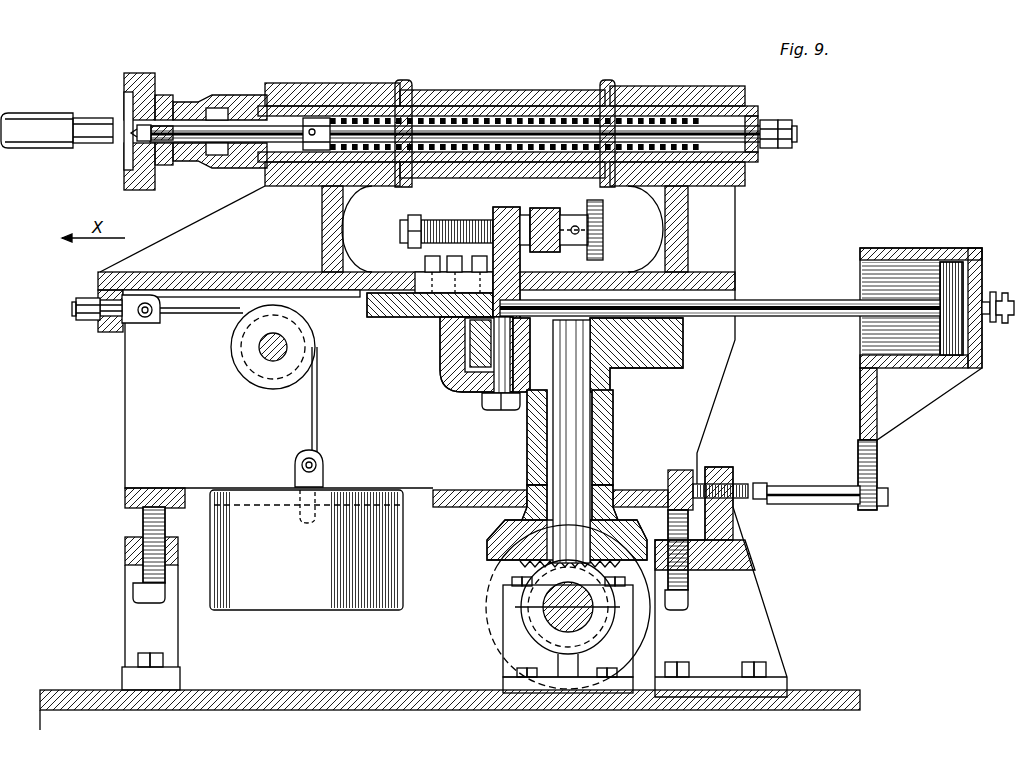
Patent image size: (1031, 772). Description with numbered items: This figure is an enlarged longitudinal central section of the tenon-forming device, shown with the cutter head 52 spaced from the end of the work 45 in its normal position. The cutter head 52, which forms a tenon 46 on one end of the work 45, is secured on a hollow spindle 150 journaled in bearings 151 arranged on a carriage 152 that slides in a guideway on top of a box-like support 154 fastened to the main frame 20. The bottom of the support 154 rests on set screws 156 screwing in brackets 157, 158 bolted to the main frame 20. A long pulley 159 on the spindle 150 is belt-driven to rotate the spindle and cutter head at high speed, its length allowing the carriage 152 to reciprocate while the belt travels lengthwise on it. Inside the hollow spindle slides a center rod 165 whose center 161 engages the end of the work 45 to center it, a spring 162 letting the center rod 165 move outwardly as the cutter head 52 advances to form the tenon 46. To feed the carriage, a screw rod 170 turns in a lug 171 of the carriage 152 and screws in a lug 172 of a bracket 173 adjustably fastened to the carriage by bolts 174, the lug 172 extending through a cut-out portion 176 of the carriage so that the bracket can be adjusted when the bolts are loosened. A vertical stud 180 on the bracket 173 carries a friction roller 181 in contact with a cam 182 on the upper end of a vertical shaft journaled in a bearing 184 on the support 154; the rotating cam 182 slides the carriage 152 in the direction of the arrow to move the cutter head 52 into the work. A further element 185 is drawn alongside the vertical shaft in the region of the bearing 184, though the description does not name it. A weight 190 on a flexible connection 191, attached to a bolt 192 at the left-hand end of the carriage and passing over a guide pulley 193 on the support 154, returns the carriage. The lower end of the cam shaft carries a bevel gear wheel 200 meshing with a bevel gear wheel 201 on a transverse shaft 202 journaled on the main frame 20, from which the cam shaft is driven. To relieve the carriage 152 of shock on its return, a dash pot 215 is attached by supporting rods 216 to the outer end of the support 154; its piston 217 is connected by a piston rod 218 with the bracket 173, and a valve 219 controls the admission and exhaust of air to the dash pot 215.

The main frame 20 is at (402, 708).
The work 45 is at (26, 120).
The tenon 46 is at (86, 122).
The cutter head 52 is at (143, 71).
The spindle 150 is at (294, 104).
The bearings 151 is at (363, 93).
The carriage 152 is at (268, 272).
The box-like support 154 is at (137, 412).
The set screws 156 is at (142, 526).
The bracket 157 is at (133, 612).
The bracket 158 is at (750, 600).
The pulley 159 is at (550, 103).
The center 161 is at (135, 131).
The spring 162 is at (440, 118).
The center rod 165 is at (237, 126).
The screw rod 170 is at (467, 214).
The lug 171 is at (545, 212).
The lug 172 is at (507, 199).
The bracket 173 is at (440, 382).
The bolts 174 is at (425, 258).
The cut-out portion 176 is at (422, 312).
The stud 180 is at (477, 393).
The friction roller 181 is at (472, 348).
The cam 182 is at (657, 362).
The bearing 184 is at (526, 437).
The spindle 185 is at (580, 433).
The weight 190 is at (285, 597).
The flexible connection 191 is at (308, 413).
The bolt 192 is at (132, 315).
The guide pulley 193 is at (237, 347).
The bevel gear wheel 200 is at (498, 537).
The bevel gear wheel 201 is at (497, 597).
The transverse shaft 202 is at (553, 620).
The dash pot 215 is at (903, 253).
The supporting rods 216 is at (817, 492).
The piston 217 is at (943, 347).
The piston rod 218 is at (780, 302).
The valve 219 is at (993, 287).